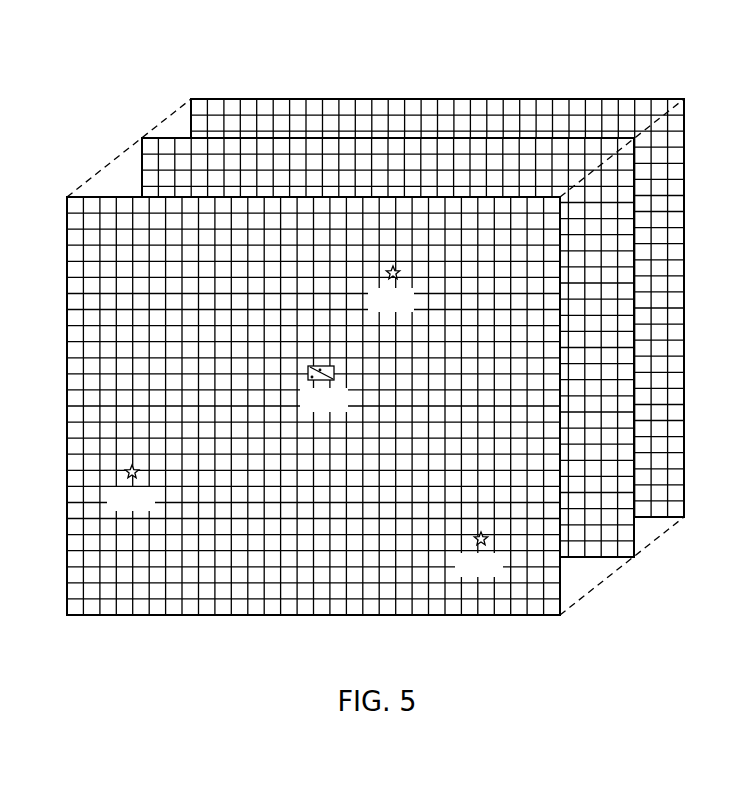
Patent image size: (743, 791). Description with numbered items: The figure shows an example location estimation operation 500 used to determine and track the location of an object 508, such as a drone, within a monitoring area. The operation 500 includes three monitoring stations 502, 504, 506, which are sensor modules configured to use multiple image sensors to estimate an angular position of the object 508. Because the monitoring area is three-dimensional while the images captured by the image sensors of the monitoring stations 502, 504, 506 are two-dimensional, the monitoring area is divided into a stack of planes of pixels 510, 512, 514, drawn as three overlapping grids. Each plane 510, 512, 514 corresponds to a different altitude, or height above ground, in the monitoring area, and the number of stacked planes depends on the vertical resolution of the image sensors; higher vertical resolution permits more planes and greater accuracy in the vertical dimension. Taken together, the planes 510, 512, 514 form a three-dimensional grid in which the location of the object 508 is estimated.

The location estimation operation 500 is at (128, 63).
The monitoring station 502 is at (394, 266).
The monitoring station 504 is at (488, 542).
The monitoring station 506 is at (126, 470).
The object 508 is at (308, 372).
The plane of pixels 510 is at (505, 616).
The plane of pixels 512 is at (609, 558).
The plane of pixels 514 is at (662, 518).